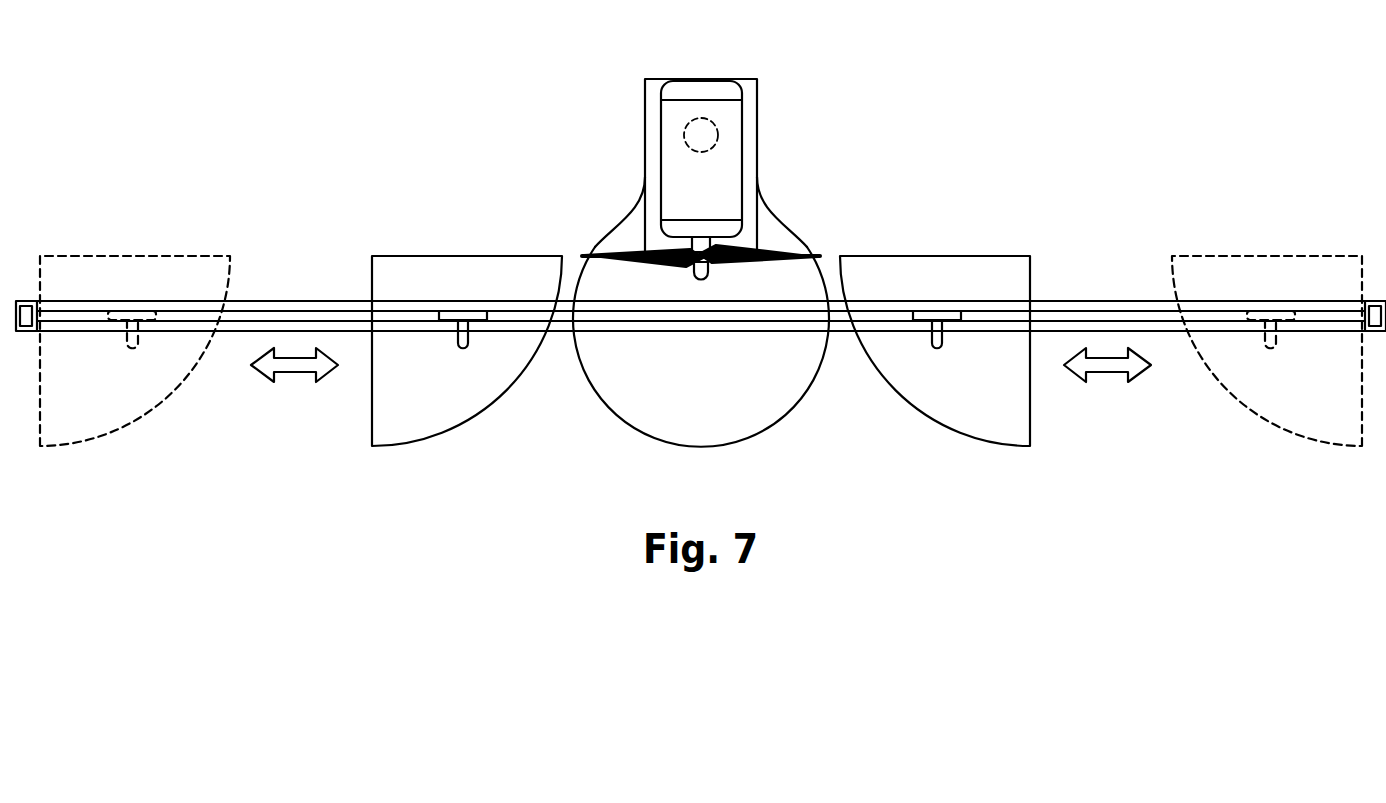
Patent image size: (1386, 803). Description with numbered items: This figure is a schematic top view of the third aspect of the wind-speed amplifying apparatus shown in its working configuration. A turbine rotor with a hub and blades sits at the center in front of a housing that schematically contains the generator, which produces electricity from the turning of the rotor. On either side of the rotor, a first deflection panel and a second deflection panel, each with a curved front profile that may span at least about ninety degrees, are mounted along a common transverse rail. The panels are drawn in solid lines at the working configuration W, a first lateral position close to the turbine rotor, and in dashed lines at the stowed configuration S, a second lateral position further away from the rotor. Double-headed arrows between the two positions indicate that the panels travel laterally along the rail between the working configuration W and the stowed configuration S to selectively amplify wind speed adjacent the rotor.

The working configuration W is at (708, 335).
The stowed configuration S is at (153, 208).